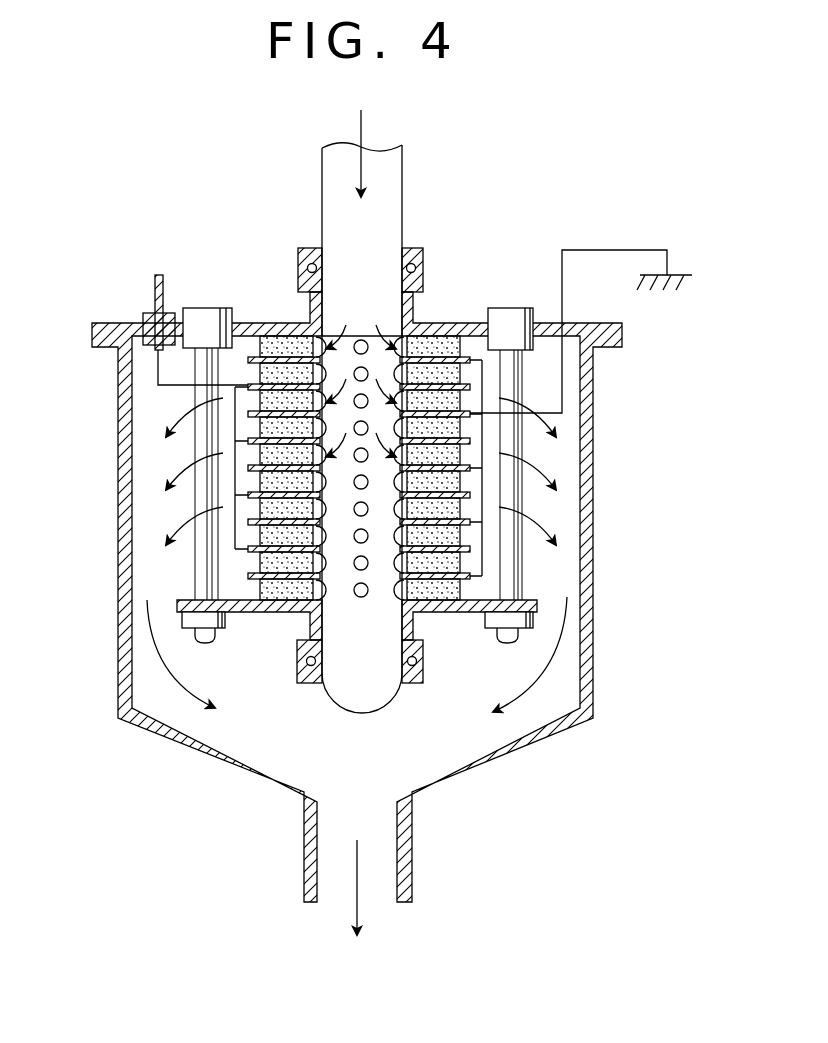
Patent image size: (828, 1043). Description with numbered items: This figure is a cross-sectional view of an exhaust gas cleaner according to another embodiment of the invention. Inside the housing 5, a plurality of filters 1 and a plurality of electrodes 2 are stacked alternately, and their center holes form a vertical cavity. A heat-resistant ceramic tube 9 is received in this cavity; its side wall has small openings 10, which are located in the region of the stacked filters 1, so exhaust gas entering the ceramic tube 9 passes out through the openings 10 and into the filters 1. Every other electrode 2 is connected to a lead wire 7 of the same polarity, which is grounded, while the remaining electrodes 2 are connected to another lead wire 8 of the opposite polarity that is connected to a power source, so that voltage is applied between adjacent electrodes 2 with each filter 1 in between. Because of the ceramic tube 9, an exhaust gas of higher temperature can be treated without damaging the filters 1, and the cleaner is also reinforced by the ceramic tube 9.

The filters 1 is at (433, 338).
The electrodes 2 is at (450, 613).
The housing 5 is at (595, 487).
The lead wire 7 is at (600, 250).
The lead wire 8 is at (153, 295).
The heat-resistant ceramic tube 9 is at (385, 208).
The small openings 10 is at (307, 620).